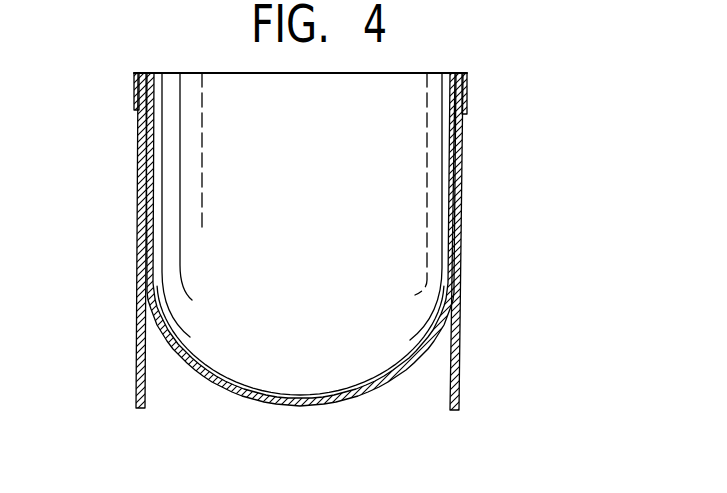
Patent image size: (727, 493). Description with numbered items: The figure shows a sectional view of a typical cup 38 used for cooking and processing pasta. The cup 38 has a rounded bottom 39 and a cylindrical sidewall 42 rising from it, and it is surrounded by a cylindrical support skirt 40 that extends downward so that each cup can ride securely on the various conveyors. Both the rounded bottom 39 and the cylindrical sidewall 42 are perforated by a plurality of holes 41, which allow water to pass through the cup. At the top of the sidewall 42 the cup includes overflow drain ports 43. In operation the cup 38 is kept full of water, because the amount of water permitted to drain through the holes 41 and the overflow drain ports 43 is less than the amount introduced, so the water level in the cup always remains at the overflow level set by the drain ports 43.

The cup 38 is at (519, 141).
The rounded bottom 39 is at (338, 407).
The cylindrical support skirt 40 is at (137, 362).
The holes 41 is at (140, 132).
The cylindrical sidewall 42 is at (142, 195).
The overflow drain ports 43 is at (468, 86).